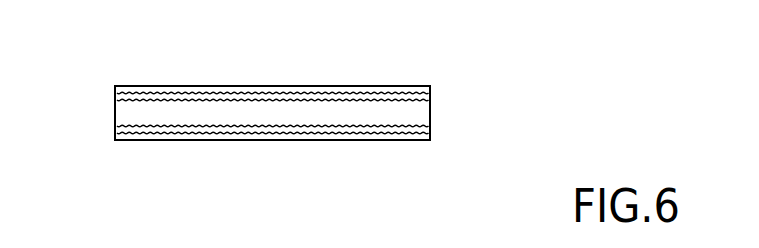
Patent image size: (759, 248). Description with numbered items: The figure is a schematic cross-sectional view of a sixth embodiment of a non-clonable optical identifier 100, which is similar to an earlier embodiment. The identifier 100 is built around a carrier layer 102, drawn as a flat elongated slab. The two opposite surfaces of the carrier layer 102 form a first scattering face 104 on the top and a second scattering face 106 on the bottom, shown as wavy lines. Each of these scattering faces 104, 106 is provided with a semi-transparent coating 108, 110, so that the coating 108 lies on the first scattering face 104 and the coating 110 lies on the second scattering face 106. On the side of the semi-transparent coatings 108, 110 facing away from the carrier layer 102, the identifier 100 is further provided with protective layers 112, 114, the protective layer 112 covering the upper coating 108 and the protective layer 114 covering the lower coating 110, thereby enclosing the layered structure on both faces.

The non-clonable optical identifier 100 is at (292, 109).
The carrier layer 102 is at (118, 114).
The first scattering face 104 is at (307, 66).
The second scattering face 106 is at (307, 163).
The semi-transparent coating 108 is at (218, 94).
The semi-transparent coating 110 is at (152, 136).
The protective layer 112 is at (330, 87).
The protective layer 114 is at (330, 140).